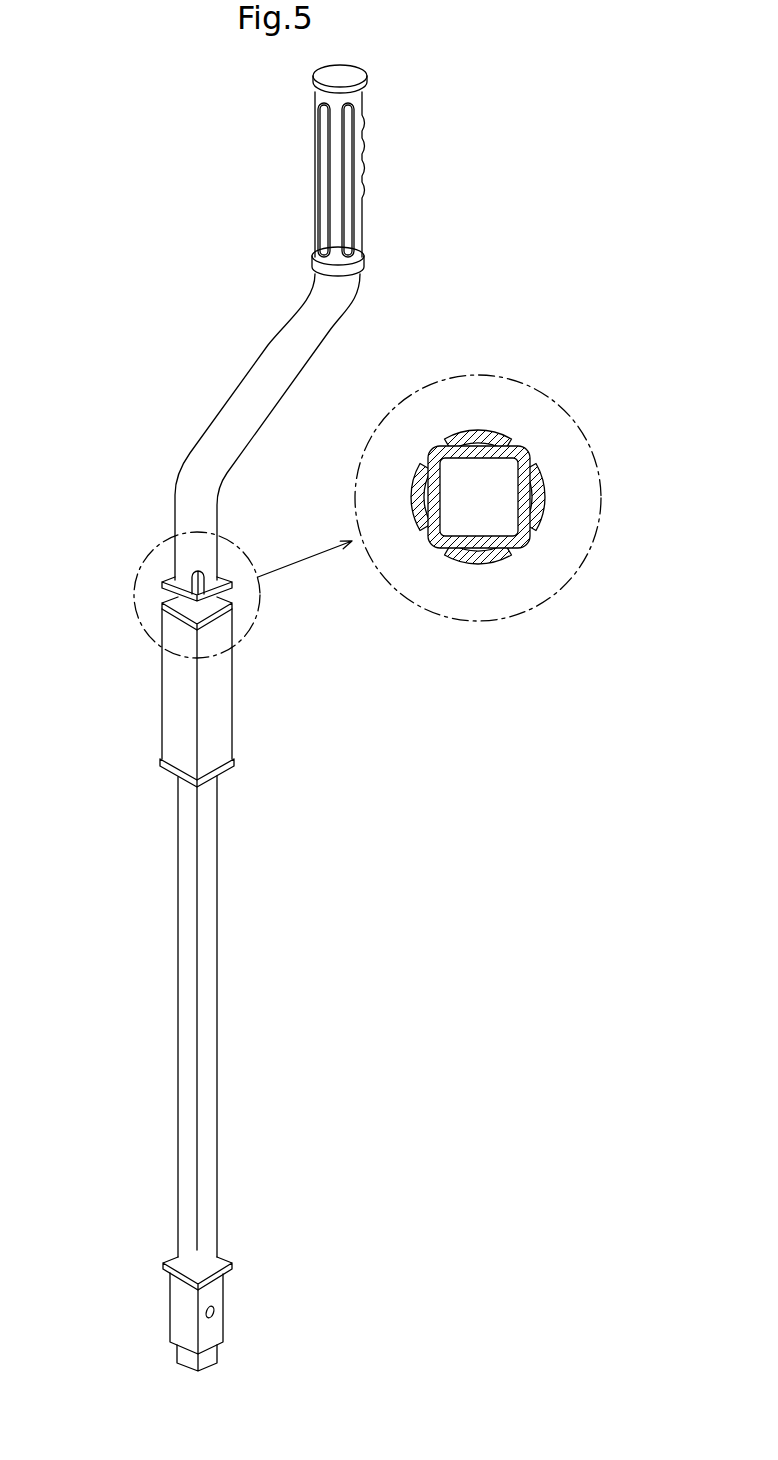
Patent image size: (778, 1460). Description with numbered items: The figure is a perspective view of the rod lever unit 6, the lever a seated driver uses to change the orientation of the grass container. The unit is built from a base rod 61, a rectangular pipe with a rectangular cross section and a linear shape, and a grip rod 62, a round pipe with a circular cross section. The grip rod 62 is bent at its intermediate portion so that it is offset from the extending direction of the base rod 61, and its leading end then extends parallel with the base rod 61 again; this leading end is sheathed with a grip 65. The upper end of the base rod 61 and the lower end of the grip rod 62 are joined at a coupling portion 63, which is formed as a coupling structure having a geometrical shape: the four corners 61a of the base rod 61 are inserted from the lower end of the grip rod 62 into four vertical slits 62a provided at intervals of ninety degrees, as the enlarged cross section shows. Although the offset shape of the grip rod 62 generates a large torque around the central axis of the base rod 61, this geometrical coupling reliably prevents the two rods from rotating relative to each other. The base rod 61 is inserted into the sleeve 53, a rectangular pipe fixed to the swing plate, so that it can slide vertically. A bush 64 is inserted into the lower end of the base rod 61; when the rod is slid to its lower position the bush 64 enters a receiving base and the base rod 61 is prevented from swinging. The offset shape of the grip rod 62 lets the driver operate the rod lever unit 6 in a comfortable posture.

The rod lever unit 6 is at (233, 246).
The sleeve 53 is at (178, 704).
The base rod 61 is at (205, 1003).
The corners of the base rod 61a is at (522, 548).
The grip rod 62 is at (268, 372).
The vertical slits 62a is at (444, 439).
The coupling portion 63 is at (190, 582).
The bush 64 is at (183, 1313).
The grip 65 is at (364, 164).